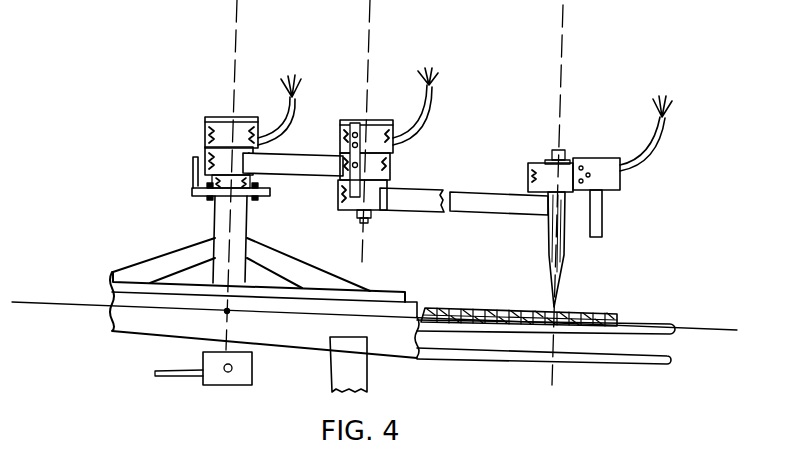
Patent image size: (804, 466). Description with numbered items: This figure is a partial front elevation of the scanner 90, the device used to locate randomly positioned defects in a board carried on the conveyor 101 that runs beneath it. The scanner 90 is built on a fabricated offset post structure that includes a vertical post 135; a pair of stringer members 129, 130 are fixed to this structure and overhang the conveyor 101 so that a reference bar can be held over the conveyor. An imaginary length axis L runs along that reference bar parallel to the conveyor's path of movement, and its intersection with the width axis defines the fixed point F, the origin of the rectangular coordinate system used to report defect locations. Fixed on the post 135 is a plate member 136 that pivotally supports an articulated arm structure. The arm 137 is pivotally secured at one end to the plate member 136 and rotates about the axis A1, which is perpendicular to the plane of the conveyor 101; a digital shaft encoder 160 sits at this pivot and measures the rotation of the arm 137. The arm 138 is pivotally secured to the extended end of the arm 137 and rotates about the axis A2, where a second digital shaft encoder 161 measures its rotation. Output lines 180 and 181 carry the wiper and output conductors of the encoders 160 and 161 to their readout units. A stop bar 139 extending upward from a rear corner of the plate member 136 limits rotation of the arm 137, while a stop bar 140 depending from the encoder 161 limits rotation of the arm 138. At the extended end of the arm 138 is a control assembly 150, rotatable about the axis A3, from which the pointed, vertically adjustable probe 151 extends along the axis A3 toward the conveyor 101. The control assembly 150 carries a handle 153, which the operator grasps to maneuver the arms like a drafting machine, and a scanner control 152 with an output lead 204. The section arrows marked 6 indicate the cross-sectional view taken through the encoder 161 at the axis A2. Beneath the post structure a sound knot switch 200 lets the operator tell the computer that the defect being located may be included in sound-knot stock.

The section line of FIG. 6 is at (371, 78).
The scanner 90 is at (307, 77).
The conveyor 101 is at (645, 328).
The stringer member 129 is at (174, 253).
The stringer member 130 is at (262, 250).
The vertical post 135 is at (243, 223).
The plate member 136 is at (190, 187).
The arm member 137 is at (297, 149).
The arm member 138 is at (465, 191).
The stop bar 139 is at (193, 157).
The stop bar 140 is at (342, 198).
The control assembly 150 is at (537, 158).
The probe 151 is at (557, 300).
The scanner control 152 is at (600, 163).
The handle 153 is at (603, 219).
The digital shaft encoder 160 is at (225, 110).
The digital shaft encoder 161 is at (356, 108).
The output line 180 is at (296, 99).
The output line 181 is at (431, 113).
The output lead 204 is at (640, 157).
The sound knot switch 200 is at (230, 372).
The axis A1 is at (238, 33).
The axis A2 is at (371, 22).
The axis A3 is at (564, 28).
The length axis L is at (46, 302).
The fixed point F is at (225, 312).